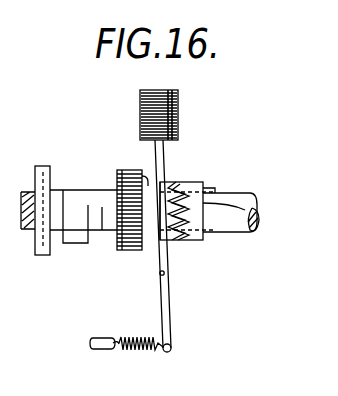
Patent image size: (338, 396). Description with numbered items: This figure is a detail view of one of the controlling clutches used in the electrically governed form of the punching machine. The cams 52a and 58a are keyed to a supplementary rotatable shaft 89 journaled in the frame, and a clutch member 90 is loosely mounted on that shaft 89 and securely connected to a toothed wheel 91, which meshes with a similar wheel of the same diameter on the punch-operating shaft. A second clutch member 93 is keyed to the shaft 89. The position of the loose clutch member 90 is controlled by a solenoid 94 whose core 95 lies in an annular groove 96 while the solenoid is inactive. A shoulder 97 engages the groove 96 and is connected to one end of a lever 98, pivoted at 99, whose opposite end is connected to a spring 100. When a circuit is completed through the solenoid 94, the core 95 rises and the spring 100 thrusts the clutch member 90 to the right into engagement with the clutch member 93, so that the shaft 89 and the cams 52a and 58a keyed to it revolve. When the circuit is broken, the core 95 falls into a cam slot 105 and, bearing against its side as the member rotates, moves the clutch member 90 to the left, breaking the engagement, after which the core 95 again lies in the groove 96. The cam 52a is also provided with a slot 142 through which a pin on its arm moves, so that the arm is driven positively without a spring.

The solenoid 94 is at (178, 118).
The lever 98 is at (171, 305).
The pivot 99 is at (160, 275).
The slot 142 is at (27, 170).
The cam 52a is at (47, 252).
The cam 58a is at (78, 246).
The toothed wheel 91 is at (130, 252).
The cam slot 105 is at (148, 178).
The clutch member 93 is at (203, 238).
The core 95 is at (207, 170).
The shoulder 97 is at (157, 213).
The clutch member 90 is at (190, 184).
The supplementary rotatable shaft 89 is at (240, 197).
The annular groove 96 is at (258, 214).
The spring 100 is at (146, 351).